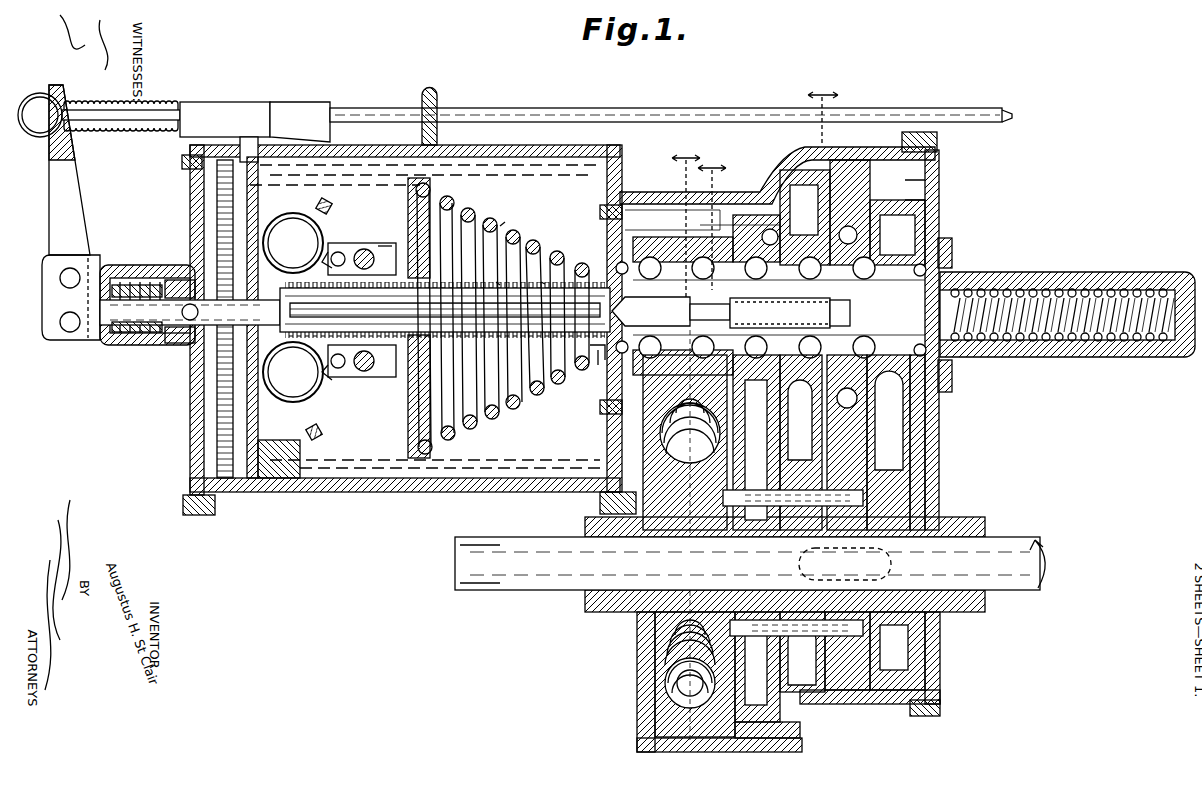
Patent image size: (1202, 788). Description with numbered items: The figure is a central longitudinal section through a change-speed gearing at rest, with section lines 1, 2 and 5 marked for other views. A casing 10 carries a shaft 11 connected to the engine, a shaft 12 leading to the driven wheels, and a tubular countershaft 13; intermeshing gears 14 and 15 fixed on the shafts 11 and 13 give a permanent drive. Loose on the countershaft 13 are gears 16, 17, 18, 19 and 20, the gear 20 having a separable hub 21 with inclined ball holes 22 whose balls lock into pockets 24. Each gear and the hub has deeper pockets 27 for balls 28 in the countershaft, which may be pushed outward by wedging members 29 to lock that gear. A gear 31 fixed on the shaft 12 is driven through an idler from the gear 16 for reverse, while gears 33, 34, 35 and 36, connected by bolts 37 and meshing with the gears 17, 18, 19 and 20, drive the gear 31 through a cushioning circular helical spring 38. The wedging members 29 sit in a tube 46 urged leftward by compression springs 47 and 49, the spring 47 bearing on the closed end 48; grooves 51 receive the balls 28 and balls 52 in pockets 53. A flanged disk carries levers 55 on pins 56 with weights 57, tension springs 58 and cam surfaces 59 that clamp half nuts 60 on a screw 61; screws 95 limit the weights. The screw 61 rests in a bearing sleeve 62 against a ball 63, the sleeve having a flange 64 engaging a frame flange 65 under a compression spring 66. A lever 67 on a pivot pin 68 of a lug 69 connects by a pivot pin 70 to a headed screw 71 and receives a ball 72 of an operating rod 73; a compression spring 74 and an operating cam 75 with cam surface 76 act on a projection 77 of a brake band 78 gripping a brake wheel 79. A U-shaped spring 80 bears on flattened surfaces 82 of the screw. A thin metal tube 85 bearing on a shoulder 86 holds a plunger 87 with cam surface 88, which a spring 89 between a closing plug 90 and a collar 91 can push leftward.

The section line 1 is at (823, 110).
The section line 2 is at (686, 219).
The section line 5 is at (712, 219).
The casing 10 is at (197, 226).
The shaft 11 is at (1012, 540).
The shaft 12 is at (555, 592).
The tubular countershaft 13 is at (985, 272).
The gear 14 is at (930, 487).
The gear 15 is at (928, 200).
The gear 16 is at (660, 237).
The gear 17 is at (706, 237).
The gear 18 is at (750, 230).
The gear 19 is at (772, 186).
The gear 20 is at (850, 200).
The hub 21 is at (905, 235).
The inclined ball holes 22 is at (935, 415).
The pockets 24 is at (930, 435).
The pockets 27 is at (925, 255).
The balls 28 is at (771, 311).
The wedging members 29 is at (606, 416).
The gear 31 is at (660, 665).
The gear 33 is at (745, 742).
The gear 34 is at (778, 722).
The gear 35 is at (822, 660).
The gear 36 is at (855, 660).
The bolts 37 is at (815, 510).
The circular helical spring 38 is at (668, 690).
The tube 46 is at (492, 430).
The compression spring 47 is at (1092, 272).
The closed end 48 is at (1135, 357).
The compression spring 49 is at (500, 226).
The longitudinal grooves 51 is at (543, 282).
The balls 52 is at (596, 362).
The pockets 53 is at (602, 400).
The levers 55 is at (345, 253).
The pins 56 is at (380, 246).
The weights 57 is at (293, 307).
The tension springs 58 is at (364, 250).
The cam surfaces 59 is at (380, 252).
The half nuts 60 is at (338, 380).
The screw 61 is at (498, 282).
The bearing sleeve 62 is at (252, 378).
The ball 63 is at (172, 340).
The flange 64 is at (185, 350).
The flange 65 is at (185, 278).
The compression spring 66 is at (130, 333).
The lever 67 is at (80, 200).
The pivot pin 68 is at (105, 232).
The lug 69 is at (80, 270).
The pivot pin 70 is at (67, 332).
The headed screw 71 is at (115, 318).
The ball 72 is at (40, 115).
The operating rod 73 is at (468, 108).
The compression spring 74 is at (183, 100).
The operating cam 75 is at (238, 103).
The cam surface 76 is at (330, 104).
The projection 77 is at (255, 140).
The brake band 78 is at (190, 163).
The brake wheel 79 is at (272, 448).
The U-shaped spring 80 is at (330, 252).
The flattened surfaces 82 is at (522, 334).
The thin metal tube 85 is at (590, 288).
The shoulder 86 is at (643, 237).
The plunger 87 is at (651, 311).
The cam surface 88 is at (704, 312).
The spring 89 is at (945, 375).
The closing plug 90 is at (948, 252).
The collar 91 is at (762, 312).
The screws 95 is at (326, 327).